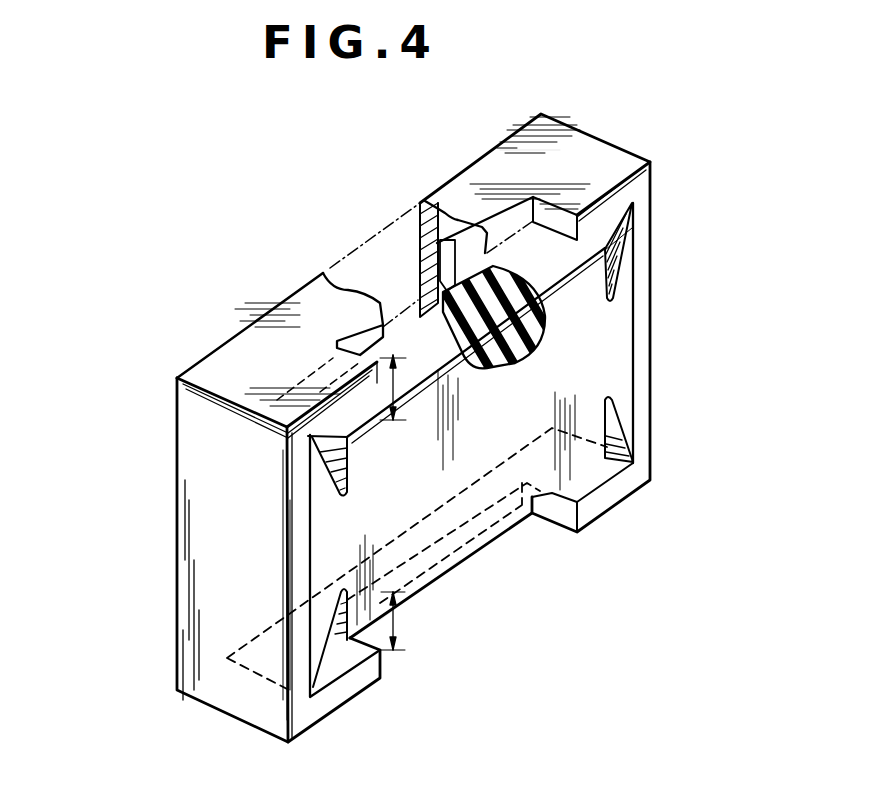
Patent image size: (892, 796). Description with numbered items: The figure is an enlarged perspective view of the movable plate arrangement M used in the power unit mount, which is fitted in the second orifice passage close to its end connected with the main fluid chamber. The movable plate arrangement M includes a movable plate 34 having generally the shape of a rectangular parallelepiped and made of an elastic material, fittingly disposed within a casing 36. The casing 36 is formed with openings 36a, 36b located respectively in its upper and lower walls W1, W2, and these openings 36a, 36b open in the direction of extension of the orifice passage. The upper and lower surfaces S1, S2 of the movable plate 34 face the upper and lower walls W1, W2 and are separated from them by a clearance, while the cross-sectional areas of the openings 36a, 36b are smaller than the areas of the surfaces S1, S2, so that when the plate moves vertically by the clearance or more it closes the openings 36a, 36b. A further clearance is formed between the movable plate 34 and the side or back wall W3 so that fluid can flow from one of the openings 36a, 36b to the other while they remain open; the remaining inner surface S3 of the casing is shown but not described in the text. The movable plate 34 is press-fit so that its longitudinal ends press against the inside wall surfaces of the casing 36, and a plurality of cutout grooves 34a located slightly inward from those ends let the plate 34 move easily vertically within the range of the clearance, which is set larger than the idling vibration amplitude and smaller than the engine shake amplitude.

The movable plate arrangement M is at (411, 406).
The movable plate 34 is at (417, 523).
The cutout grooves 34a is at (615, 285).
The casing 36 is at (190, 447).
The opening 36a is at (558, 208).
The opening 36b is at (565, 515).
The upper surface S1 is at (607, 247).
The lower surface S2 is at (432, 595).
The inner wall surface S3 is at (578, 381).
The upper wall W1 is at (495, 162).
The lower wall W2 is at (621, 504).
The side or back wall W3 is at (437, 262).